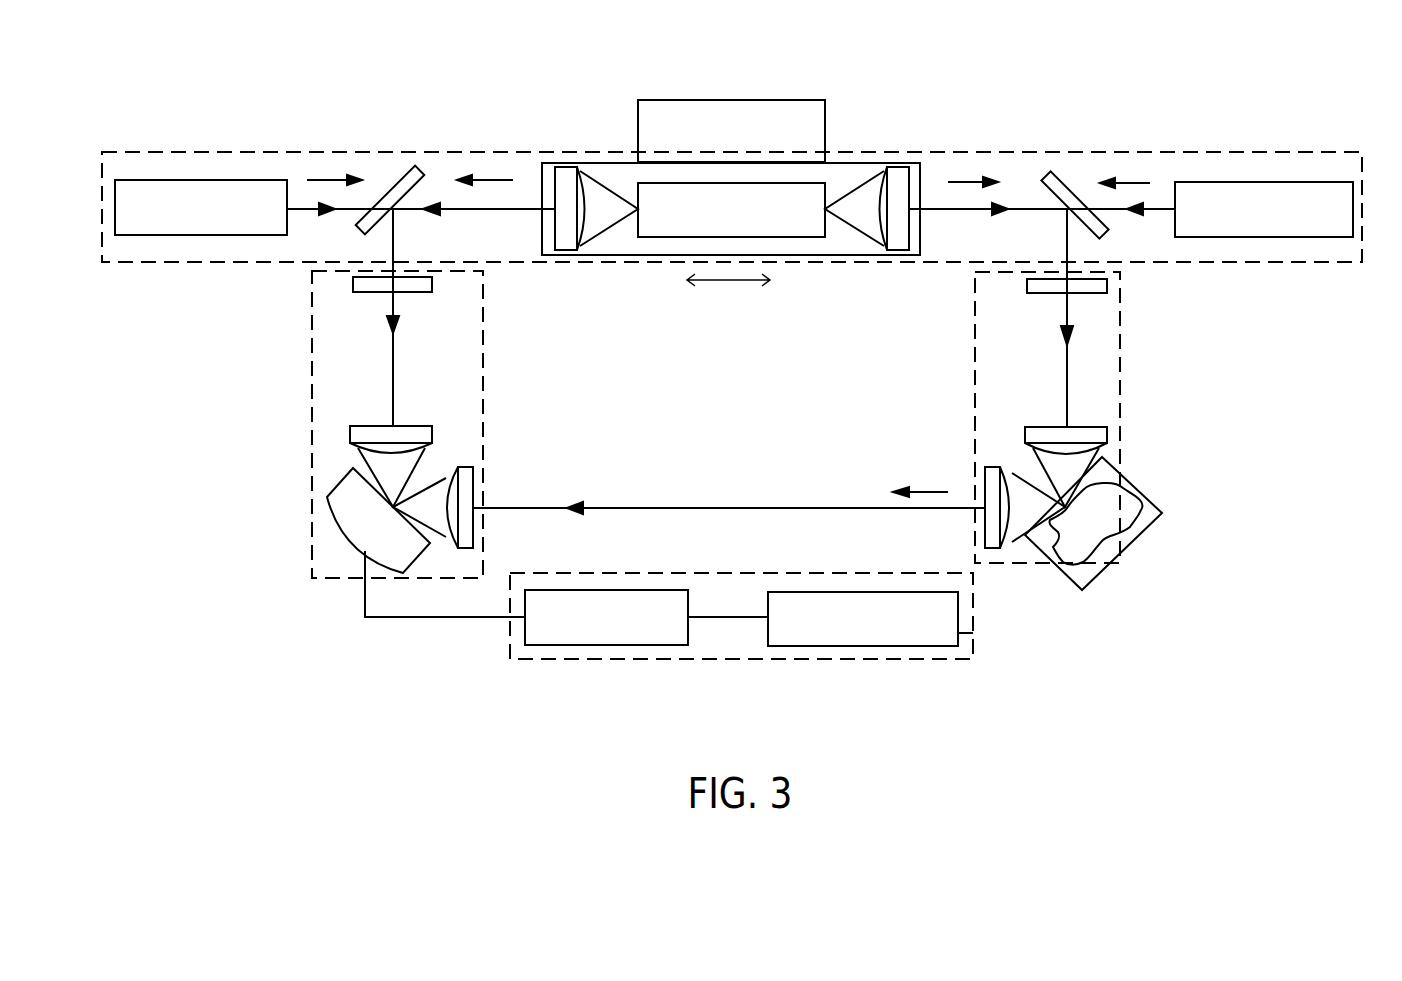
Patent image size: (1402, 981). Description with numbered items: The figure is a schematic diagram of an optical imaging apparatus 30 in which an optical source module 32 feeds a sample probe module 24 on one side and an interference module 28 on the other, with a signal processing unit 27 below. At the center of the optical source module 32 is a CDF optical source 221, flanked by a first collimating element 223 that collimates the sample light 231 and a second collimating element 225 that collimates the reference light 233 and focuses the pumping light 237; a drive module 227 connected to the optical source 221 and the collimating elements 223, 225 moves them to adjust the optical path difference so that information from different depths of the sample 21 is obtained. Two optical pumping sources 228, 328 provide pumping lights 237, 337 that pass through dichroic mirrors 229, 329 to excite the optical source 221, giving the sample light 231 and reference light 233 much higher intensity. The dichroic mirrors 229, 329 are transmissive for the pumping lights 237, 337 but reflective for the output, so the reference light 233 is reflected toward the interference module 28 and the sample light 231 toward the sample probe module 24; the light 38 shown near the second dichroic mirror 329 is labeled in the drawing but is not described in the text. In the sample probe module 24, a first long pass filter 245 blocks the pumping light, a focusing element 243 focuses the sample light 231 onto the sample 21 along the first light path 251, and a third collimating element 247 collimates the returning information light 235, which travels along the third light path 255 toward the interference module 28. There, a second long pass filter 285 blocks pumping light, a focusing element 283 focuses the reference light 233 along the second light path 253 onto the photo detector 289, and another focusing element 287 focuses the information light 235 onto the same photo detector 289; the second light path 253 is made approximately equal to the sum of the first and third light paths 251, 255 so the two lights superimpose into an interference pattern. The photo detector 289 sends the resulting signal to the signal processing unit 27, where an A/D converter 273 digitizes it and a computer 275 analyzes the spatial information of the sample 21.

The optical imaging apparatus 30 is at (1179, 83).
The optical source module 32 is at (608, 152).
The optical source 221 is at (650, 237).
The first collimating element 223 is at (908, 172).
The second collimating element 225 is at (548, 165).
The drive module 227 is at (800, 100).
The optical pumping source 228 is at (207, 180).
The dichroic mirror 229 is at (407, 173).
The sample light 231 is at (970, 180).
The reference light 233 is at (485, 178).
The information light 235 is at (922, 492).
The pumping light 237 is at (340, 178).
The sample probe module 24 is at (977, 360).
The focusing element 243 is at (1097, 427).
The first long pass filter 245 is at (1108, 288).
The third collimating element 247 is at (990, 467).
The first light path 251 is at (1067, 360).
The second light path 253 is at (503, 212).
The third light path 255 is at (705, 508).
The sample 21 is at (1123, 488).
The signal processing unit 27 is at (788, 660).
The A/D converter 273 is at (567, 647).
The computer 275 is at (973, 633).
The interference module 28 is at (303, 208).
The focusing element 283 is at (353, 423).
The second long pass filter 285 is at (353, 288).
The focusing element 287 is at (473, 477).
The photo detector 289 is at (327, 497).
The optical pumping source 328 is at (1257, 182).
The dichroic mirror 329 is at (1052, 175).
The pumping light 337 is at (1130, 182).
The light beam 38 is at (1158, 205).